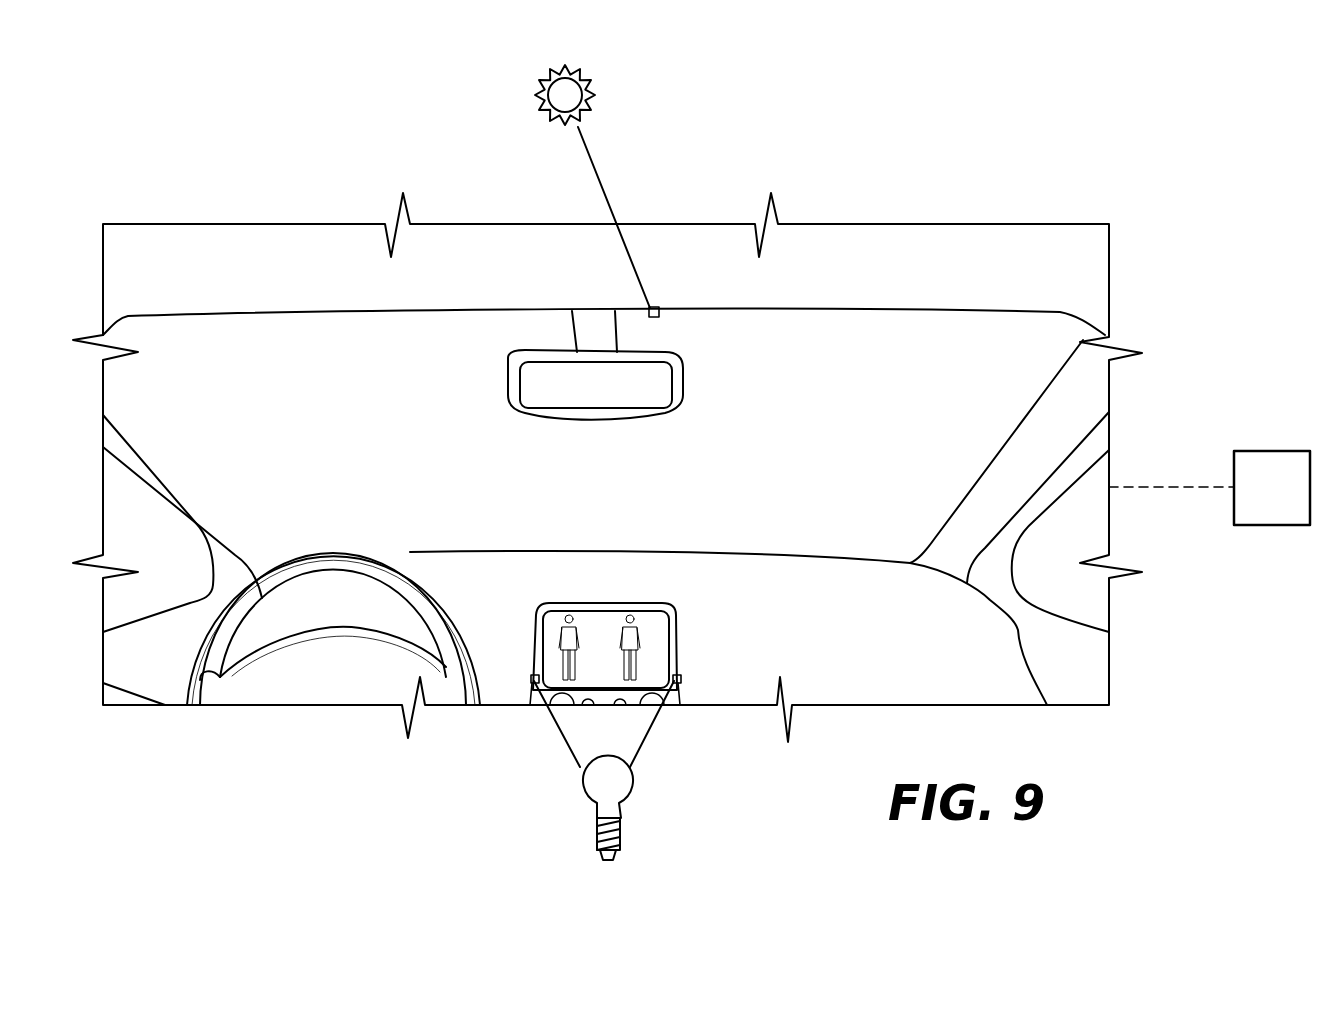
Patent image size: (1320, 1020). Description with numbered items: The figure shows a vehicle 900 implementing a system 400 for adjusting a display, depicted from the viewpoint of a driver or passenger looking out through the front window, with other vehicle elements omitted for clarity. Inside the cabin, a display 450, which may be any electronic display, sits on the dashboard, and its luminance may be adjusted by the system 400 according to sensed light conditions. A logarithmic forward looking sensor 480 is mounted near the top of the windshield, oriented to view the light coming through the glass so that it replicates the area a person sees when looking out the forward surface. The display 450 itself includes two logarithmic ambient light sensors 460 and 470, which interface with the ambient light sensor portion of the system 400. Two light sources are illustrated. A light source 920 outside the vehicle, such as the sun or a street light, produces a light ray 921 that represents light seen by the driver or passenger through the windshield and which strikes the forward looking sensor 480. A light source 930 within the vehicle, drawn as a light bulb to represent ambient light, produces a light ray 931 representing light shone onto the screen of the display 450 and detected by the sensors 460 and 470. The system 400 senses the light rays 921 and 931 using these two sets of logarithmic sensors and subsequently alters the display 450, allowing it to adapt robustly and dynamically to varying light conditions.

The vehicle 900 is at (242, 224).
The light source 920 is at (606, 66).
The light ray 921 is at (608, 197).
The logarithmic forward looking sensor 480 is at (660, 316).
The display 450 is at (677, 650).
The logarithmic ambient light sensor 460 is at (531, 679).
The logarithmic ambient light sensor 470 is at (681, 679).
The light ray 931 is at (550, 723).
The light source 930 is at (634, 817).
The system 400 is at (1290, 500).